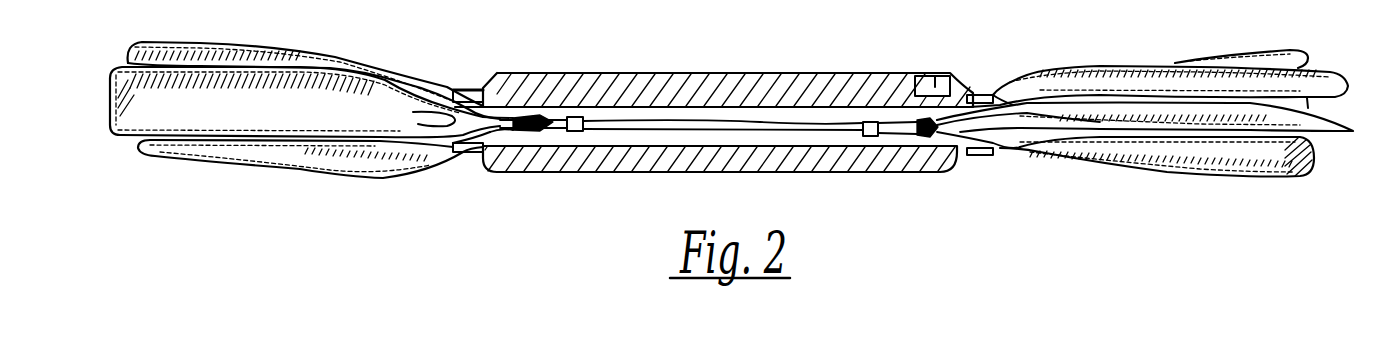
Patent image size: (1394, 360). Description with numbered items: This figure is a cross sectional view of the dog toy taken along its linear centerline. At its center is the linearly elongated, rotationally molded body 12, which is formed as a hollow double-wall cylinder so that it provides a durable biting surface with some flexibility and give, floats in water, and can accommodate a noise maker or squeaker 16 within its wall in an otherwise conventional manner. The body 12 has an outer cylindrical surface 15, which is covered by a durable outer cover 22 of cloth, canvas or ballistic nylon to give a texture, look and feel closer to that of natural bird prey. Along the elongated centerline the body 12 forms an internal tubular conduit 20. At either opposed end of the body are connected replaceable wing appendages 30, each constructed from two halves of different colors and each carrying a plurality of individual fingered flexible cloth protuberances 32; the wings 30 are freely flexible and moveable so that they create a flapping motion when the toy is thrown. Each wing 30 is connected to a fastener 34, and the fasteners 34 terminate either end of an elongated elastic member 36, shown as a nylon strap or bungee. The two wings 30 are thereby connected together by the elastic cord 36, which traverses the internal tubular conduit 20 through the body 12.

The body 12 is at (907, 155).
The outer cylindrical surface 15 is at (806, 73).
The squeaker 16 is at (935, 72).
The internal tubular conduit 20 is at (958, 110).
The outer cover 22 is at (797, 175).
The wing appendage 30 is at (239, 82).
The fingered flexible cloth protuberances 32 is at (1230, 160).
The fastener 34 is at (903, 120).
The elastic member 36 is at (703, 124).